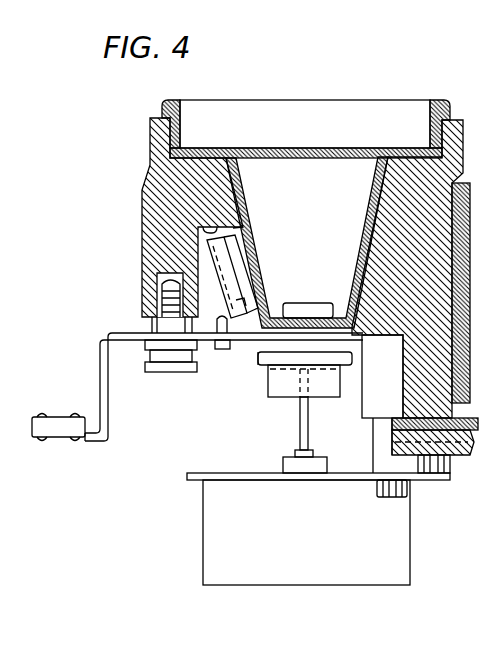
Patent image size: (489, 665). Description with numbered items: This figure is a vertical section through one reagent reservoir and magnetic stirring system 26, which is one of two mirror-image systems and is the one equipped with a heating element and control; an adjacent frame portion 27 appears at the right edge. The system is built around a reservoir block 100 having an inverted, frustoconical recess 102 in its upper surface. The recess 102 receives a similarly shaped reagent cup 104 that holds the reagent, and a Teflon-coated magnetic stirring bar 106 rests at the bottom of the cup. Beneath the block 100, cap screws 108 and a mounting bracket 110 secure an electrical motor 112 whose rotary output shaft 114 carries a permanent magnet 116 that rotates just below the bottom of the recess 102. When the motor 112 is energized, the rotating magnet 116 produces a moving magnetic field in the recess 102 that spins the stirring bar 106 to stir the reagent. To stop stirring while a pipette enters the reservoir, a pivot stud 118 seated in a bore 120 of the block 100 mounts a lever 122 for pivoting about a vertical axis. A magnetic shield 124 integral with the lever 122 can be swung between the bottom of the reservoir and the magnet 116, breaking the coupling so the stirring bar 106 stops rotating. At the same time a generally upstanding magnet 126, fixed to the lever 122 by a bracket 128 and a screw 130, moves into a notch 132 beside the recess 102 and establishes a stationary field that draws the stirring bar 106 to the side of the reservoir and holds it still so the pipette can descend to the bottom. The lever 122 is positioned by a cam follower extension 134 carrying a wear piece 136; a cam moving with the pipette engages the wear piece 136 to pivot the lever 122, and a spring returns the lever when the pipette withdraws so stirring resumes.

The reagent reservoir and magnetic stirring system 26 is at (134, 162).
The frame member 27 is at (470, 244).
The reservoir block 100 is at (152, 216).
The recess 102 is at (366, 190).
The reagent cup 104 is at (262, 100).
The magnetic stirring bar 106 is at (303, 303).
The cap screws 108 is at (393, 498).
The mounting bracket 110 is at (203, 462).
The electrical motor 112 is at (246, 576).
The rotary output shaft 114 is at (300, 437).
The permanent magnet 116 is at (255, 357).
The pivot stud 118 is at (158, 372).
The bore 120 is at (158, 290).
The lever 122 is at (100, 357).
The magnetic shield 124 is at (355, 345).
The magnet 126 is at (214, 240).
The bracket 128 is at (226, 262).
The screw 130 is at (223, 350).
The notch 132 is at (236, 226).
The cam follower extension 134 is at (93, 439).
The wear piece 136 is at (60, 418).